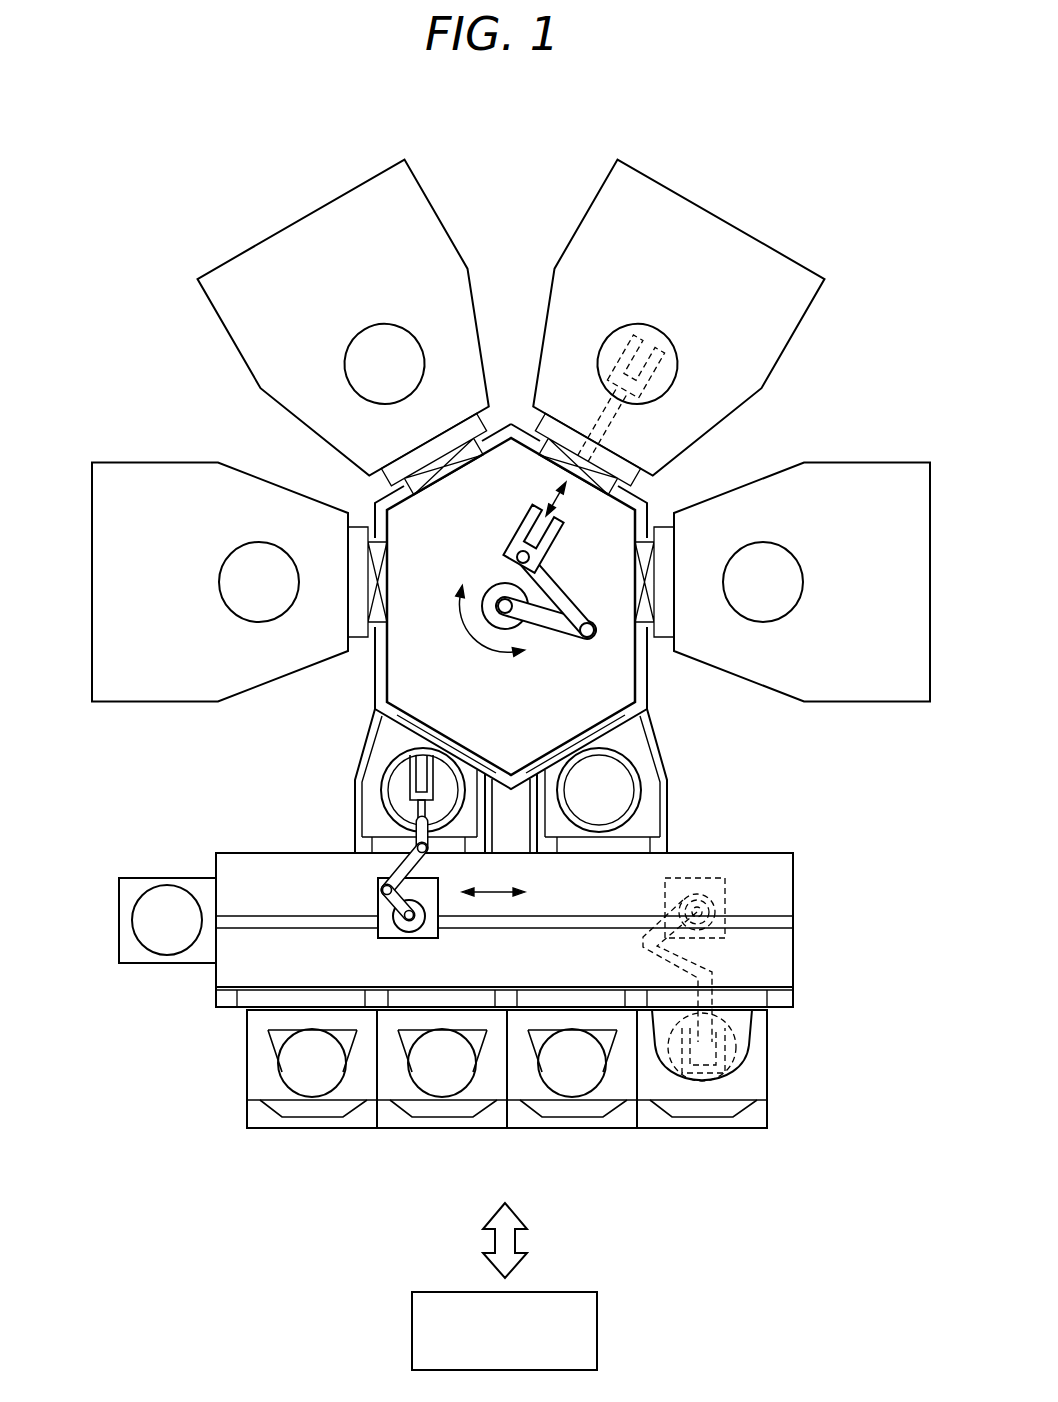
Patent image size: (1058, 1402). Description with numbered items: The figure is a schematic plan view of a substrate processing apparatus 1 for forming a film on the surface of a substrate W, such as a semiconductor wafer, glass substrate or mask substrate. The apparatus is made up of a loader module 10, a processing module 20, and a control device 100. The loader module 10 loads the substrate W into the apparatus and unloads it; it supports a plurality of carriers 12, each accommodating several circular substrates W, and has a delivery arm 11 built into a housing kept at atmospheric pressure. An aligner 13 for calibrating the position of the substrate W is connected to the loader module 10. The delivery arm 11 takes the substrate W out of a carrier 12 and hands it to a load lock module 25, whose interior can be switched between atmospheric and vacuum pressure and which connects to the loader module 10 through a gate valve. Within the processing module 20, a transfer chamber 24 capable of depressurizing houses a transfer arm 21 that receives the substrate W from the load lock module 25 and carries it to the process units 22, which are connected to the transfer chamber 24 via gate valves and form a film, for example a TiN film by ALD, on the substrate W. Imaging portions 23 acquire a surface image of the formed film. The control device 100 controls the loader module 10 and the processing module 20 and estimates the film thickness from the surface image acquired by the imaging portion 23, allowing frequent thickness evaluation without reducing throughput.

The substrate processing apparatus 1 is at (826, 178).
The loader module 10 is at (841, 978).
The delivery arm 11 is at (402, 869).
The carrier 12 is at (356, 1043).
The aligner 13 is at (119, 918).
The processing module 20 is at (138, 250).
The transfer arm 21 is at (550, 633).
The process unit 22 is at (258, 247).
The imaging portion 23 is at (694, 203).
The transfer chamber 24 is at (383, 714).
The load lock module 25 is at (355, 795).
The substrate W is at (313, 1062).
The control device 100 is at (597, 1313).